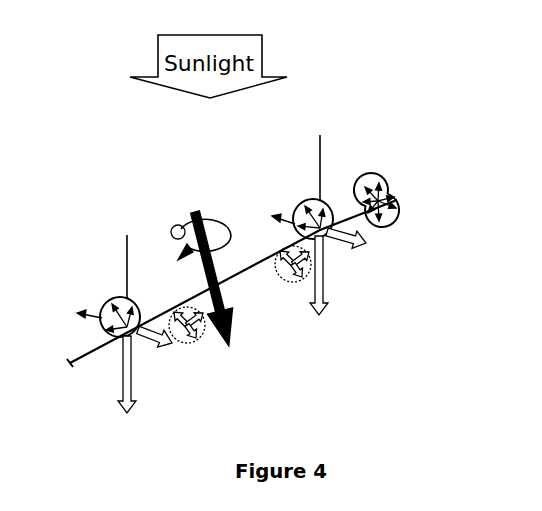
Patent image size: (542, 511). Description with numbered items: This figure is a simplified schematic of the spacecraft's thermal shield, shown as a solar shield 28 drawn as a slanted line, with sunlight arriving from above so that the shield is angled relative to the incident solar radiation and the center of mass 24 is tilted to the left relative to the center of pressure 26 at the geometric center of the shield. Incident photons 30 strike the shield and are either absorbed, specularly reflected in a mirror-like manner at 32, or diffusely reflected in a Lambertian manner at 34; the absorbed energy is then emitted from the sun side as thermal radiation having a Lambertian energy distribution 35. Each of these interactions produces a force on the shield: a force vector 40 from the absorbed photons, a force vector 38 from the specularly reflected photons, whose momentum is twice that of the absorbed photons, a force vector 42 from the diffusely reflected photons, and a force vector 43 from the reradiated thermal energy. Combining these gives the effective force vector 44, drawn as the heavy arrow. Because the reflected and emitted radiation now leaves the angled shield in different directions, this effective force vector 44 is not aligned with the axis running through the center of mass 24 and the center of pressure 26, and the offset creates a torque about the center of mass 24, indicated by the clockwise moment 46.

The center of mass 24 is at (171, 230).
The center of pressure 26 is at (225, 287).
The solar shield 28 is at (70, 360).
The incident photons 30 is at (320, 158).
The specular reflection 32 is at (272, 213).
The diffuse reflection 34 is at (326, 203).
The Lambertian energy distribution 35 is at (388, 177).
The force vector from specularly reflected photons 38 is at (360, 249).
The force vector from absorbed photons 40 is at (322, 317).
The force vector from diffusely reflected photons 42 is at (290, 281).
The force vector from thermal radiation 43 is at (391, 224).
The effective force vector 44 is at (225, 343).
The moment 46 is at (187, 218).